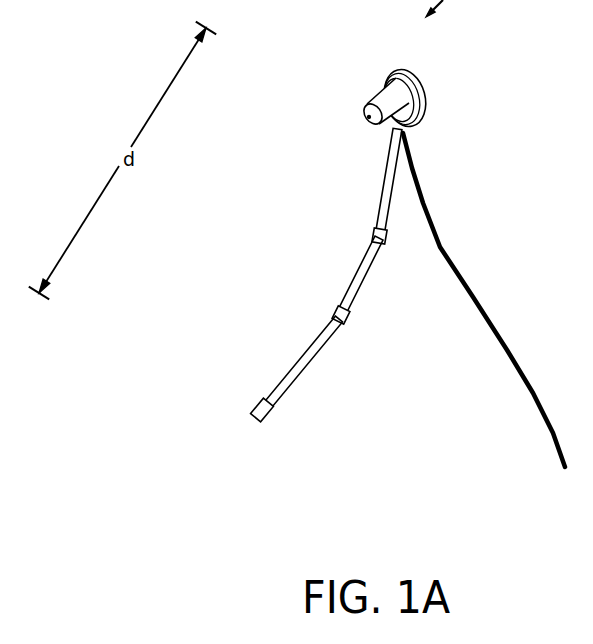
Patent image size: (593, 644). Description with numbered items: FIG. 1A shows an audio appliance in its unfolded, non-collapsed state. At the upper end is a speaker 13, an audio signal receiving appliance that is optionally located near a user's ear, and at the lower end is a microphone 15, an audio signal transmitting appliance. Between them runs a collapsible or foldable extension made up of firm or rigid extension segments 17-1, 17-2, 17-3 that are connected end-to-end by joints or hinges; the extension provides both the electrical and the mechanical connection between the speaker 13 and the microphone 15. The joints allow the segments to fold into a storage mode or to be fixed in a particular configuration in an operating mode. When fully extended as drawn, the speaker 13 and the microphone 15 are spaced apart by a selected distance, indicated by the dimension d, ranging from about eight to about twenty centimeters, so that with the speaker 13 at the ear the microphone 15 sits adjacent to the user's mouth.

The speaker 13 is at (348, 80).
The extension segment 17-1 is at (317, 186).
The extension segment 17-2 is at (300, 273).
The extension segment 17-3 is at (255, 352).
The microphone 15 is at (301, 437).